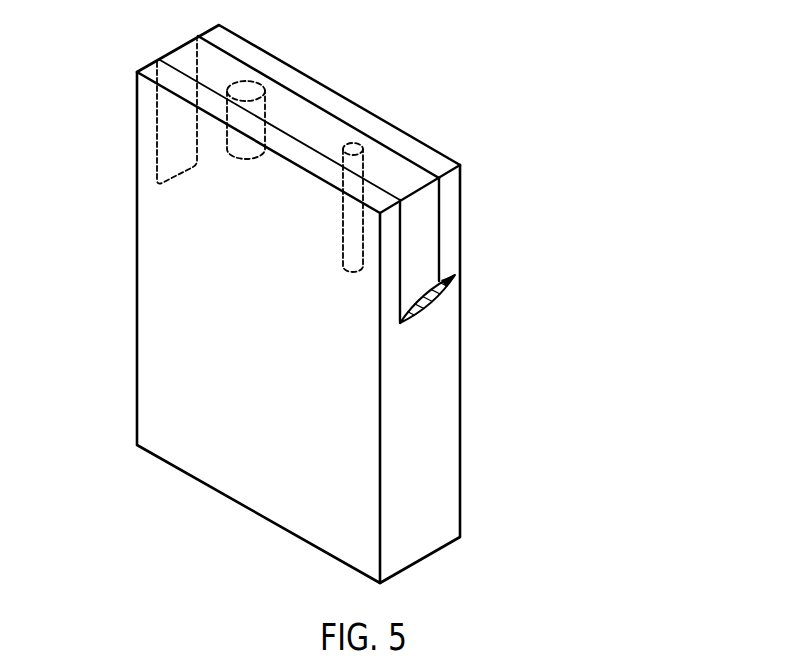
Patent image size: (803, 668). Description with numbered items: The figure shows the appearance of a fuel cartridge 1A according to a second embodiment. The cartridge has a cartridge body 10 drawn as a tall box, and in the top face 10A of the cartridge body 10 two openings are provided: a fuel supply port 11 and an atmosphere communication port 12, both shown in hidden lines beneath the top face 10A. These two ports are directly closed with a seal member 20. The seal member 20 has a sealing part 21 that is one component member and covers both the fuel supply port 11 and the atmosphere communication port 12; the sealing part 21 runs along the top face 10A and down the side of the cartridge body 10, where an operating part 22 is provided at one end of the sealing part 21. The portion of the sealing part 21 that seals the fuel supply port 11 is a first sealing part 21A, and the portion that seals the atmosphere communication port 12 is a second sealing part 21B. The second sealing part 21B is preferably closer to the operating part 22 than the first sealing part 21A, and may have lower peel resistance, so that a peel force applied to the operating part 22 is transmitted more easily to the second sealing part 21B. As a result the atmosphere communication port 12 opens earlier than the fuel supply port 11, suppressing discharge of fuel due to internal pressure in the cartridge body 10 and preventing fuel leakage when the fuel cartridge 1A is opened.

The fuel cartridge 1A is at (594, 46).
The cartridge body 10 is at (188, 458).
The top face 10A is at (237, 34).
The fuel supply port 11 is at (277, 72).
The atmosphere communication port 12 is at (382, 133).
The seal member 20 is at (532, 222).
The sealing part 21 is at (423, 234).
The first sealing part 21A is at (247, 90).
The second sealing part 21B is at (347, 143).
The operating part 22 is at (448, 290).